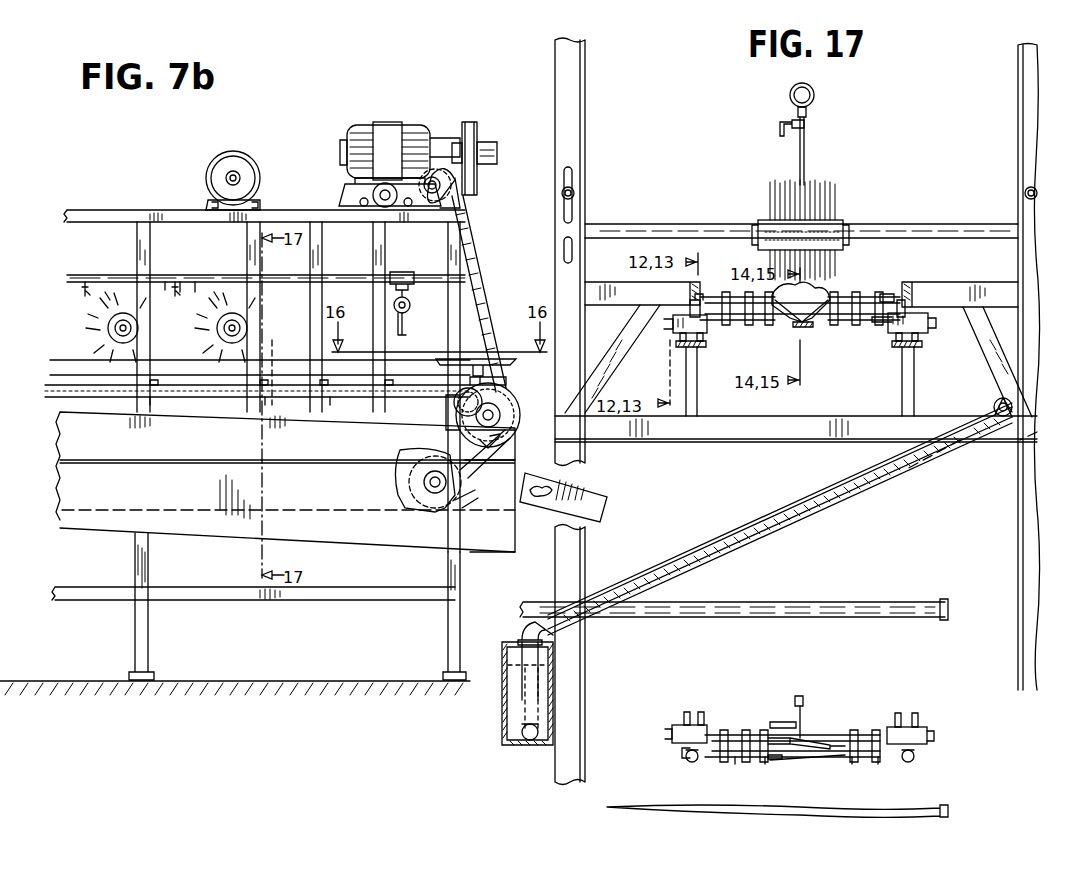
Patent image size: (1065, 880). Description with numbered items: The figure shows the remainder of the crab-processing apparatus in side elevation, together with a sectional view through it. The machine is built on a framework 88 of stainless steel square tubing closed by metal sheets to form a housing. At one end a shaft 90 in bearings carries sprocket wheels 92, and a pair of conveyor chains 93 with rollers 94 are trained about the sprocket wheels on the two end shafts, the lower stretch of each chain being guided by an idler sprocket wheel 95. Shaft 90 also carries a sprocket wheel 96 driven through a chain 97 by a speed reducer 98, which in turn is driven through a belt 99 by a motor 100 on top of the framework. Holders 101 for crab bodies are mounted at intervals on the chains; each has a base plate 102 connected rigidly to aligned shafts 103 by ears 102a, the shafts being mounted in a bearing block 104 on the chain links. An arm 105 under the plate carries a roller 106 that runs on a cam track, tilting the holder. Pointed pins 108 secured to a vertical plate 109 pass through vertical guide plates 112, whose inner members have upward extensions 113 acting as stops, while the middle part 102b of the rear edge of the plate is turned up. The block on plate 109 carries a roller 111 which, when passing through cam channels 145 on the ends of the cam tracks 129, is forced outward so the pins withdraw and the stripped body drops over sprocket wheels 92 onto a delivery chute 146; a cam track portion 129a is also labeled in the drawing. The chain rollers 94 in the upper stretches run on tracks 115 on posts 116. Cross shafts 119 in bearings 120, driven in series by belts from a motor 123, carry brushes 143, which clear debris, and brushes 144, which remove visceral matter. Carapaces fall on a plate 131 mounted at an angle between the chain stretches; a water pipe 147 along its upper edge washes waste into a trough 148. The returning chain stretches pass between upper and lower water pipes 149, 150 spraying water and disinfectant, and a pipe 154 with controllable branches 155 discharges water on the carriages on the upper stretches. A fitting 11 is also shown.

In FIG. 17, the fitting 11 is at (898, 297).
In FIG. 7B, the framework 88 is at (143, 201).
In FIG. 7B, the shaft 90 is at (500, 410).
In FIG. 7B, the sprocket wheels 92 is at (502, 385).
In FIG. 7B, the conveyor chains 93 is at (55, 372).
In FIG. 17, the rollers 94 is at (704, 338).
In FIG. 7B, the idler sprocket wheel 95 is at (420, 512).
In FIG. 7B, the sprocket wheel 96 is at (456, 407).
In FIG. 7B, the chain 97 is at (484, 294).
In FIG. 7B, the speed reducer 98 is at (438, 148).
In FIG. 7B, the belt 99 is at (477, 188).
In FIG. 7B, the motor 100 is at (382, 124).
In FIG. 7B, the holders 101 is at (159, 401).
In FIG. 17, the holders 101 is at (869, 292).
In FIG. 17, the base plate 102 is at (850, 322).
In FIG. 17, the ears 102a is at (816, 738).
In FIG. 17, the middle part of the rear edge 102b is at (805, 330).
In FIG. 17, the shafts 103 is at (746, 737).
In FIG. 17, the bearing block 104 is at (928, 328).
In FIG. 17, the arm 105 is at (786, 722).
In FIG. 17, the roller 106 is at (797, 696).
In FIG. 17, the pins 108 is at (740, 762).
In FIG. 17, the vertical plate 109 is at (692, 762).
In FIG. 7B, the roller 111 is at (478, 360).
In FIG. 17, the roller 111 is at (698, 298).
In FIG. 17, the vertical guide plates 112 is at (850, 292).
In FIG. 17, the upward extensions 113 is at (776, 760).
In FIG. 7B, the tracks 115 is at (328, 397).
In FIG. 17, the tracks 115 is at (676, 345).
In FIG. 17, the posts 116 is at (686, 400).
In FIG. 7B, the shafts 119 is at (128, 334).
In FIG. 7B, the bearings 120 is at (104, 337).
In FIG. 7B, the motor 123 is at (246, 170).
In FIG. 17, the cam tracks 129 is at (912, 284).
In FIG. 7B, the beam section 129a is at (298, 360).
In FIG. 17, the beam section 129a is at (710, 282).
In FIG. 7B, the plate 131 is at (226, 449).
In FIG. 17, the plate 131 is at (825, 494).
In FIG. 7B, the brushes 143 is at (120, 300).
In FIG. 7B, the brushes 144 is at (230, 298).
In FIG. 7B, the cam channels 145 is at (490, 360).
In FIG. 7B, the delivery chute 146 is at (600, 492).
In FIG. 17, the water pipe 147 is at (1000, 398).
In FIG. 7B, the trough 148 is at (368, 522).
In FIG. 17, the trough 148 is at (502, 734).
In FIG. 17, the upper water pipes 149 is at (848, 601).
In FIG. 17, the lower water pipe 150 is at (902, 808).
In FIG. 7B, the pipe 154 is at (184, 290).
In FIG. 17, the pipe 154 is at (814, 100).
In FIG. 7B, the controllable branches 155 is at (82, 297).
In FIG. 17, the controllable branches 155 is at (806, 142).